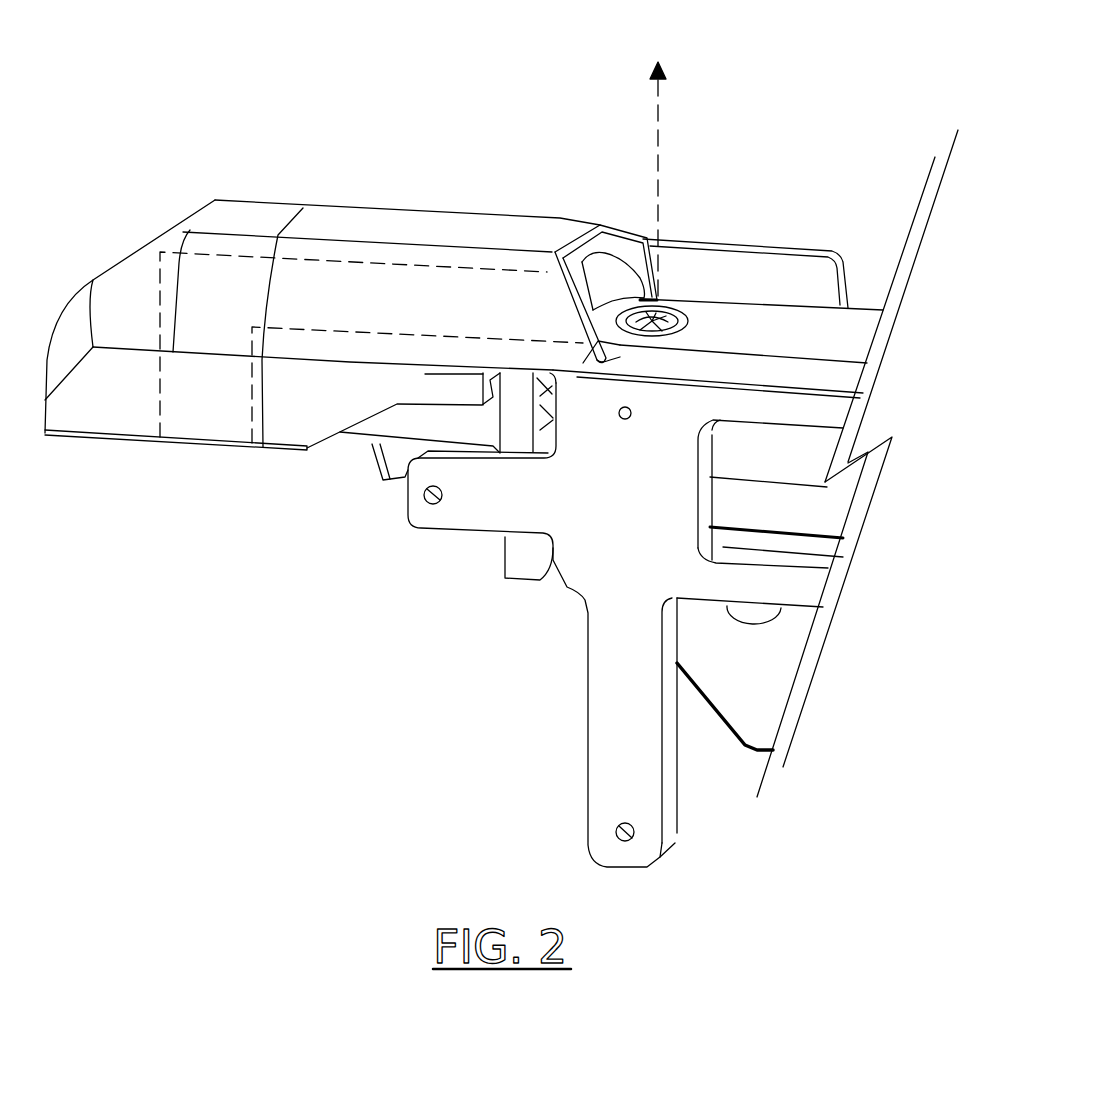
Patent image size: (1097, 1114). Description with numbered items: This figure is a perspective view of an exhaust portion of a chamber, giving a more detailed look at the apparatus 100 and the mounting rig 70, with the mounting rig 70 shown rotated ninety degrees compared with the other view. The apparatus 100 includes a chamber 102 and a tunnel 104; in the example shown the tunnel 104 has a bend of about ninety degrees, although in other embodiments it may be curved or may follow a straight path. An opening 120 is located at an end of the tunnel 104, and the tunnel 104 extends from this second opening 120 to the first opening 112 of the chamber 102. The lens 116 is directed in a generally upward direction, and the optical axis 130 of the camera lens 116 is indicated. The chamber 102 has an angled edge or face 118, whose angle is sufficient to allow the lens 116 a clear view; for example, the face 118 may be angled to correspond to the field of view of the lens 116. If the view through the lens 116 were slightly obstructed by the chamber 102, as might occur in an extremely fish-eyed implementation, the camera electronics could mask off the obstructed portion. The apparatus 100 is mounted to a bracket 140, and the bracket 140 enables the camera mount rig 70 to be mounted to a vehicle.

The mounting rig 70 is at (458, 47).
The apparatus 100 is at (250, 204).
The chamber 102 is at (453, 227).
The tunnel 104 is at (363, 240).
The first opening 112 is at (607, 277).
The lens 116 is at (690, 317).
The angled edge (face) 118 is at (587, 250).
The opening 120 is at (217, 443).
The optical axis 130 is at (658, 138).
The bracket 140 is at (583, 560).